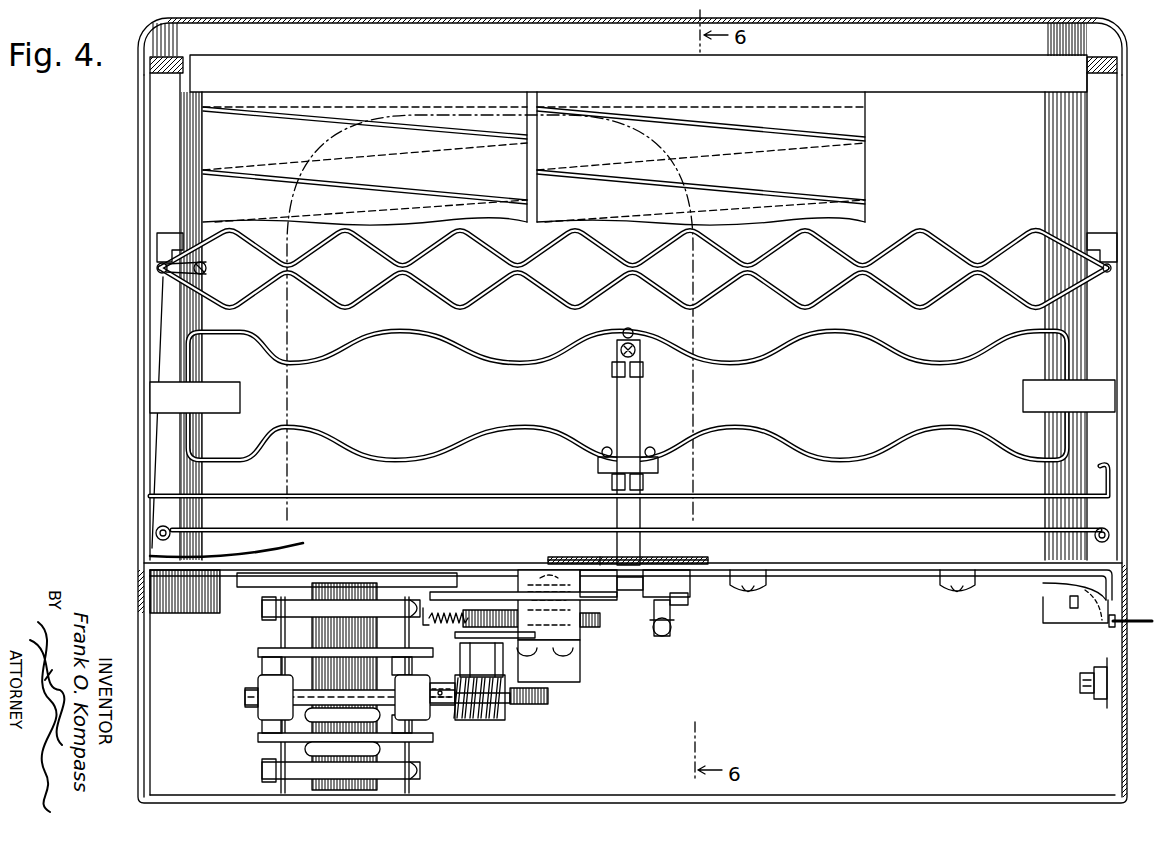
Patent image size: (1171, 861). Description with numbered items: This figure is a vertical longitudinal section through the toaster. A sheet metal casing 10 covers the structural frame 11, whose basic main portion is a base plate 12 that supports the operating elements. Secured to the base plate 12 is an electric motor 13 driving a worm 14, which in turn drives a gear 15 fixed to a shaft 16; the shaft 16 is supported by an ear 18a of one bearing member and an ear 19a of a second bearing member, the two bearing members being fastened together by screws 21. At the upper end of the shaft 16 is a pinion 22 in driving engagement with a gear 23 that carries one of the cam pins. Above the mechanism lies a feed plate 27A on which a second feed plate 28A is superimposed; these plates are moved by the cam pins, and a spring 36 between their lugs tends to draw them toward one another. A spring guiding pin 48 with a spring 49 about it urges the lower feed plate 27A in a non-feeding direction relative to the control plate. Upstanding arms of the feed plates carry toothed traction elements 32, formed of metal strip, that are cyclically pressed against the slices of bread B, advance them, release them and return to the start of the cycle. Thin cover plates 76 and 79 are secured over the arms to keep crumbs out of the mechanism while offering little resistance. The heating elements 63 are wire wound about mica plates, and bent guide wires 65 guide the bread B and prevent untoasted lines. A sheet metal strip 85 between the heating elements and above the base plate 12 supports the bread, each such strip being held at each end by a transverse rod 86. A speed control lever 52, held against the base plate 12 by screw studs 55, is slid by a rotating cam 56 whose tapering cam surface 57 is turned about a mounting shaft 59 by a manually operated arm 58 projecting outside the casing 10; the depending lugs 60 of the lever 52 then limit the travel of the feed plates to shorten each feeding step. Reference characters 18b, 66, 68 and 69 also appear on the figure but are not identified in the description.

The casing 10 is at (130, 135).
The frame 11 is at (162, 156).
The base plate 12 is at (832, 570).
The electric motor 13 is at (267, 639).
The worm 14 is at (500, 706).
The gear 15 is at (550, 697).
The shaft 16 is at (443, 707).
The ear 18a is at (528, 703).
The vertical post 18b is at (632, 422).
The ear 19a is at (475, 665).
The screws 21 is at (572, 655).
The pinion 22 is at (488, 612).
The gear 23 is at (594, 628).
The feed plate 27A is at (610, 601).
The feed plate 28A is at (600, 565).
The traction element 32 is at (478, 358).
The spring 36 is at (675, 625).
The spring guiding pin 48 is at (455, 625).
The spring 49 is at (460, 634).
The speed control lever 52 is at (890, 577).
The screw studs 55 is at (758, 590).
The rotating cam 56 is at (1075, 628).
The tapering cam surface 57 is at (1050, 601).
The manually operated arm 58 is at (1137, 618).
The mounting shaft 59 is at (1078, 683).
The depending lugs 60 is at (690, 603).
The heating elements 63 is at (262, 107).
The guide wires 65 is at (944, 246).
The wire 66 is at (149, 330).
The screw 68 is at (210, 268).
The hook bracket 69 is at (157, 258).
The cover plate 76 is at (697, 562).
The plate 79 is at (656, 560).
The sheet metal strip 85 is at (330, 527).
The rod 86 is at (153, 533).
The bread B is at (697, 323).